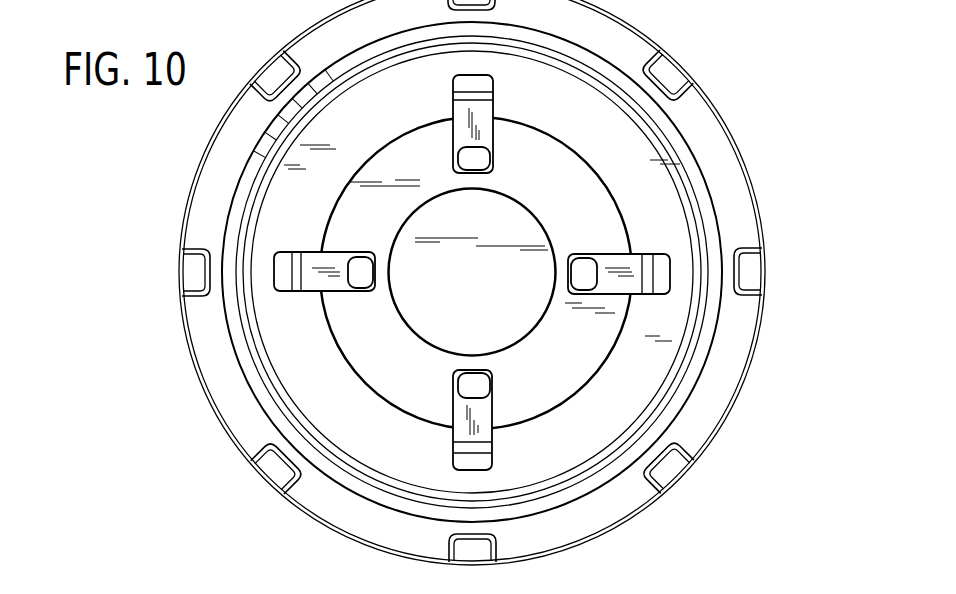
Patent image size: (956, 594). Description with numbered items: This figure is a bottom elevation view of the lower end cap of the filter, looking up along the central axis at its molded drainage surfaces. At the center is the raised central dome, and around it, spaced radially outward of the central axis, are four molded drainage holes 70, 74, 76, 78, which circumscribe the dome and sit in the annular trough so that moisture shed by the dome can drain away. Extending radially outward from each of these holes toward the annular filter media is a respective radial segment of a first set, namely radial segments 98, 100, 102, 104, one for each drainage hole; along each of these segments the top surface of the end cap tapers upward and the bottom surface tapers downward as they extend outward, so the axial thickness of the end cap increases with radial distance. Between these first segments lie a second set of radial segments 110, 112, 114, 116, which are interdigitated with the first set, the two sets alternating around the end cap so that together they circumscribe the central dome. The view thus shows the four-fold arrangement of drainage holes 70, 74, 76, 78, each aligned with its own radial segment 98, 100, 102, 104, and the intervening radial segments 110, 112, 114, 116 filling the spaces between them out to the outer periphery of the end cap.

The drainage hole 70 is at (360, 278).
The drainage hole 74 is at (473, 157).
The drainage hole 76 is at (587, 275).
The drainage hole 78 is at (473, 387).
The radial segment 98 is at (312, 261).
The radial segment 100 is at (480, 116).
The radial segment 102 is at (632, 268).
The radial segment 104 is at (483, 417).
The radial segment 110 is at (374, 128).
The radial segment 112 is at (643, 167).
The radial segment 114 is at (611, 429).
The radial segment 116 is at (361, 426).